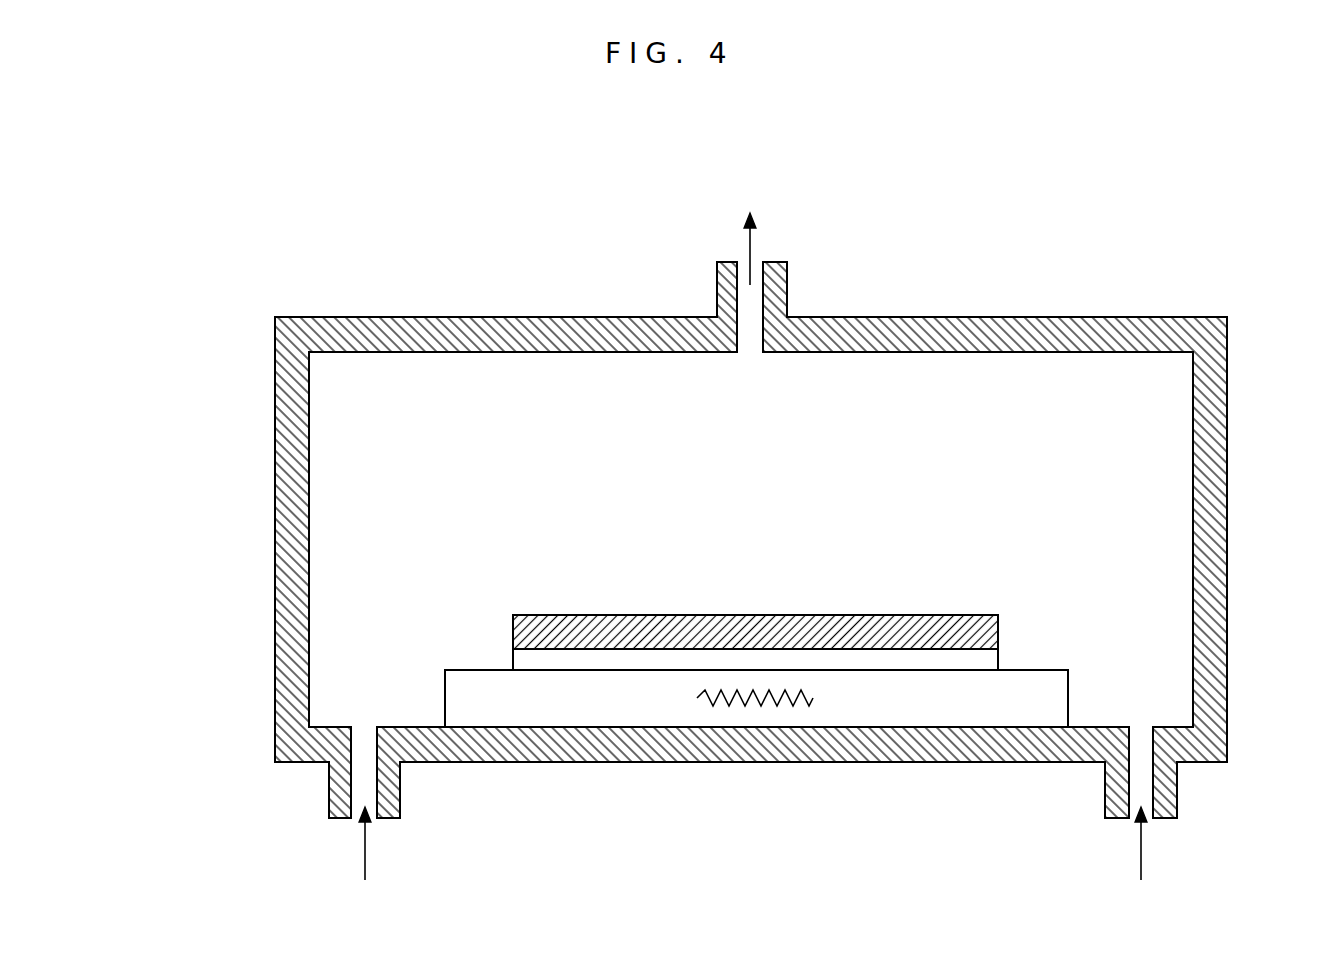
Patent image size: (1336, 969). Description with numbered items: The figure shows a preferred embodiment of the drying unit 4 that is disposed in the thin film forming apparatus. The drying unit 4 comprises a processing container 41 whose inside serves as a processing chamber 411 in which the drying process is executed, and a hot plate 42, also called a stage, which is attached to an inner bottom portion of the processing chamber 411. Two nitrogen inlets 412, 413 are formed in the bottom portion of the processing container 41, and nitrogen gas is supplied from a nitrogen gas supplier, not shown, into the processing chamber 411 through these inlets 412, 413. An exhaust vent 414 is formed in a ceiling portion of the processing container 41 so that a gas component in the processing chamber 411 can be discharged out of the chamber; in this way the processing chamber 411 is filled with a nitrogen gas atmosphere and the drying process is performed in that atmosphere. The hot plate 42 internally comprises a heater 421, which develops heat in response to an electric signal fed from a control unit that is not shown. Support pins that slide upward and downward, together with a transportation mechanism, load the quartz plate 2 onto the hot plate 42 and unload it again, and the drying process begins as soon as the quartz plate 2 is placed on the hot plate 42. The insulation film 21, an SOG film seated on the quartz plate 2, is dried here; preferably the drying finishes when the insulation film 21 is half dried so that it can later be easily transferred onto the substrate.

The drying unit 4 is at (467, 249).
The processing container 41 is at (330, 316).
The processing chamber 411 is at (326, 444).
The nitrogen inlet 412 is at (1160, 808).
The nitrogen inlet 413 is at (390, 808).
The exhaust vent 414 is at (766, 292).
The hot plate 42 is at (637, 710).
The heater 421 is at (777, 705).
The quartz plate 2 is at (985, 665).
The insulation film 21 is at (965, 630).